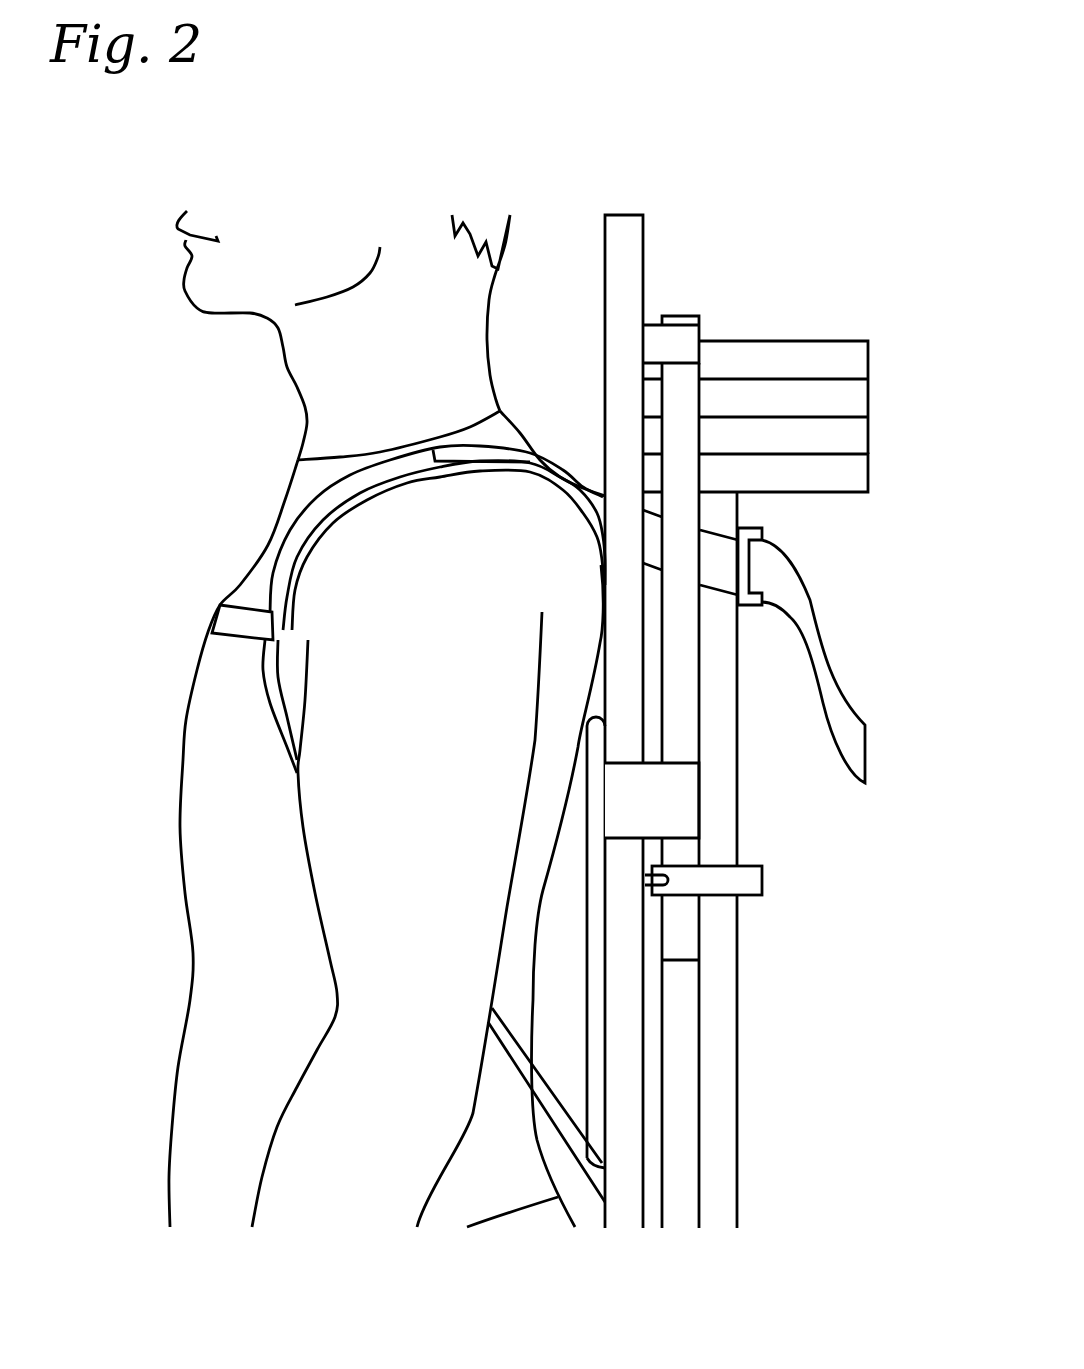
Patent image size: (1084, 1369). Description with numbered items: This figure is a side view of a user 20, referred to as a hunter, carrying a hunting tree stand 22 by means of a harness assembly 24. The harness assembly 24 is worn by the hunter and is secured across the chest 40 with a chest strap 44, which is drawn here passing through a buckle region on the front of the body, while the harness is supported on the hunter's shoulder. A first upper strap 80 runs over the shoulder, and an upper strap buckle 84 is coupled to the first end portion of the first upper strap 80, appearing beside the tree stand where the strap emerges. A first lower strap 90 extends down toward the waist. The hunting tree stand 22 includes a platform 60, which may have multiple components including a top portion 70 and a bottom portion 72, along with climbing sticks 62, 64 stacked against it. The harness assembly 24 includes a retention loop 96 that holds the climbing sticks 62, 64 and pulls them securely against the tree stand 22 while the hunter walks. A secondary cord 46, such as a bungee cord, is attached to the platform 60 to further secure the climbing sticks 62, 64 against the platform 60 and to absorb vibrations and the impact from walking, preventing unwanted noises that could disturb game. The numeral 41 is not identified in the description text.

The user 20 is at (168, 940).
The hunting tree stand 22 is at (612, 208).
The harness assembly 24 is at (590, 470).
The chest 40 is at (247, 582).
The shoulder strap 41 is at (423, 517).
The chest strap 44 is at (228, 637).
The secondary cord 46 is at (750, 877).
The platform 60 is at (630, 248).
The climbing stick 62 is at (858, 473).
The climbing stick 64 is at (858, 360).
The top portion 70 is at (643, 655).
The bottom portion 72 is at (645, 1167).
The first upper strap 80 is at (330, 502).
The upper strap buckle 84 is at (750, 605).
The first lower strap 90 is at (568, 1143).
The retention loop 96 is at (567, 478).